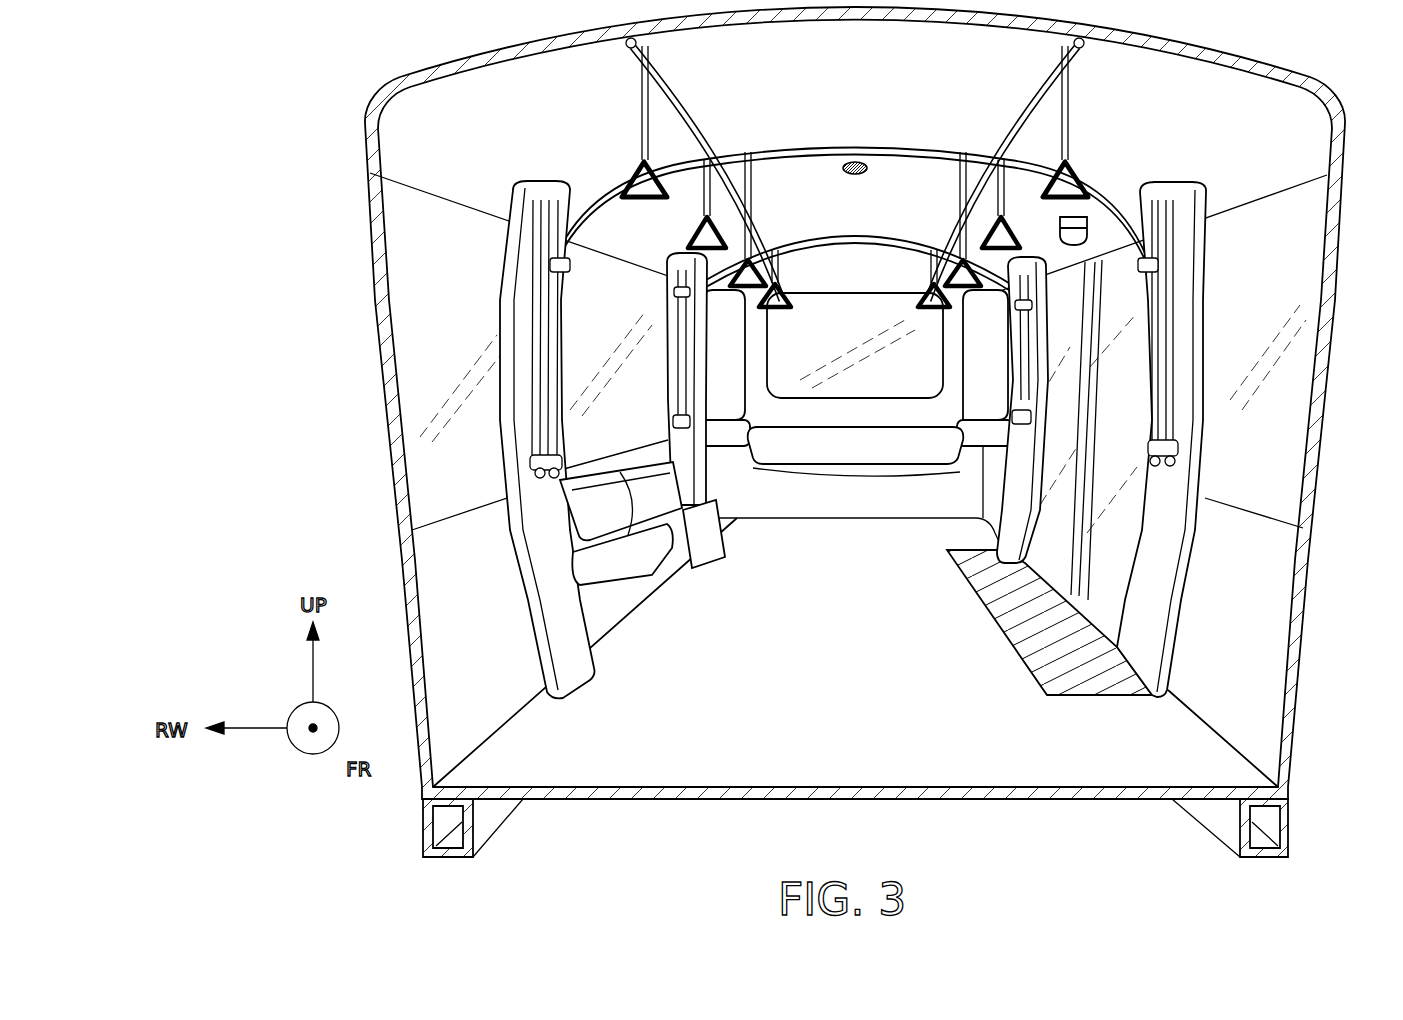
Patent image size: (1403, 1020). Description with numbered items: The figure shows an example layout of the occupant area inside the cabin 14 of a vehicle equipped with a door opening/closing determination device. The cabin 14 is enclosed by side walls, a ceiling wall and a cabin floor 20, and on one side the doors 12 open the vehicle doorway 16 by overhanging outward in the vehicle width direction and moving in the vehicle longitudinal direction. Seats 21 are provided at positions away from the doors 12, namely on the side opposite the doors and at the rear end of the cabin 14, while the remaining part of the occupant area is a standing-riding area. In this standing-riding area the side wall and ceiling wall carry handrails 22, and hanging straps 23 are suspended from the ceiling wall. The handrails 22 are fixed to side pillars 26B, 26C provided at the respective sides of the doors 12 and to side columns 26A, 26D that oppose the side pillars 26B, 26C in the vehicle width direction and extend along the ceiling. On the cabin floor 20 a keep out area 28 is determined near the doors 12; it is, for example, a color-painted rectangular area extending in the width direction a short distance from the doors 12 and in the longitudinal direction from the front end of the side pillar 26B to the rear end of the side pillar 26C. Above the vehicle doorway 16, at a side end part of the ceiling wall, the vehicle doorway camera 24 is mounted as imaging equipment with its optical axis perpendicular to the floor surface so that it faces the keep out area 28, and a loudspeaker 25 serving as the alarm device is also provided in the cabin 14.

The door 12 is at (1130, 305).
The cabin 14 is at (745, 107).
The vehicle doorway 16 is at (1108, 259).
The cabin floor 20 is at (770, 753).
The seat 21 is at (797, 440).
The handrail 22 is at (913, 150).
The hanging strap 23 is at (643, 203).
The vehicle doorway camera 24 is at (1088, 228).
The loudspeaker 25 is at (847, 175).
The side column 26A is at (543, 537).
The side pillar 26B is at (1163, 577).
The side pillar 26C is at (977, 520).
The side column 26D is at (707, 490).
The keep out area 28 is at (1033, 660).